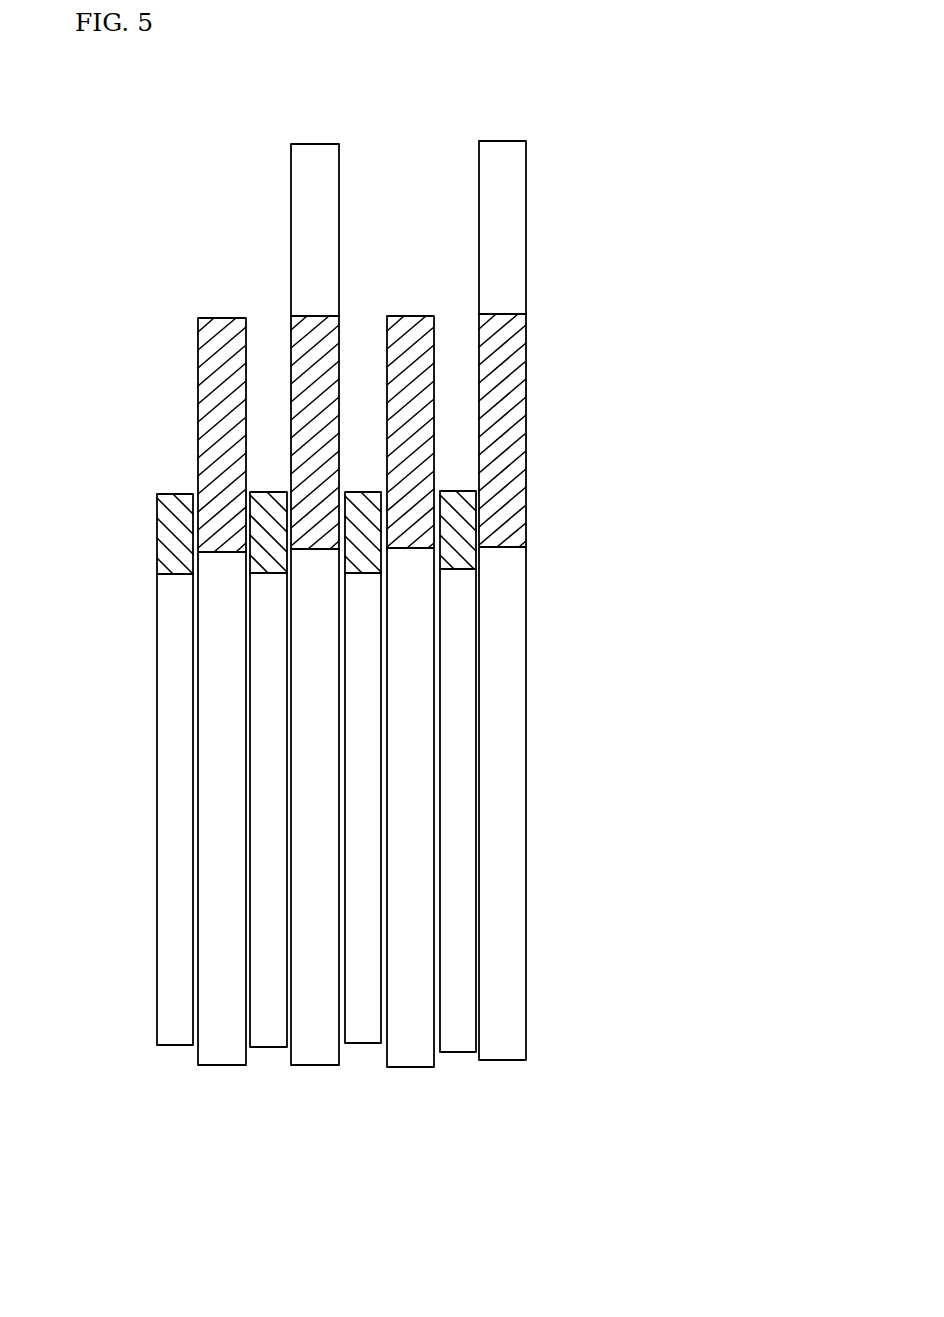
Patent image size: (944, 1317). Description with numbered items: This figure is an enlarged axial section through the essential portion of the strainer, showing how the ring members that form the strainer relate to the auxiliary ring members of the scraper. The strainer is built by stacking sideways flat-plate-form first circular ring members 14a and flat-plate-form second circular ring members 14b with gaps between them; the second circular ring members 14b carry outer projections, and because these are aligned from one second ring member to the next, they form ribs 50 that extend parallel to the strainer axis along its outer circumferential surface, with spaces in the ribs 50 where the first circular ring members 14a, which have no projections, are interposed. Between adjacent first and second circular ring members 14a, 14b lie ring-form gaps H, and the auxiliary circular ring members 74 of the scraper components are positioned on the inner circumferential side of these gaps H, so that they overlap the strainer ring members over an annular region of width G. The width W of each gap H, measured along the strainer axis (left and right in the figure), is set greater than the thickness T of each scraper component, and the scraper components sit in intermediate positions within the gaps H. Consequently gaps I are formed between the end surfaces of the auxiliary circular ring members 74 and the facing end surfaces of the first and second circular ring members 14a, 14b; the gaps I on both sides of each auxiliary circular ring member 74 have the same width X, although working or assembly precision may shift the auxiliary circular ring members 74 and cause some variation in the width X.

The rib 50 is at (505, 148).
The first circular ring member 14a is at (213, 363).
The second circular ring member 14b is at (291, 355).
The auxiliary circular ring member 74 is at (177, 502).
The gap H is at (363, 330).
The gap I is at (252, 486).
The width of gap W is at (434, 347).
The width of overlapping region G is at (480, 487).
The thickness of scraper component T is at (420, 763).
The width of gap I X is at (437, 1077).